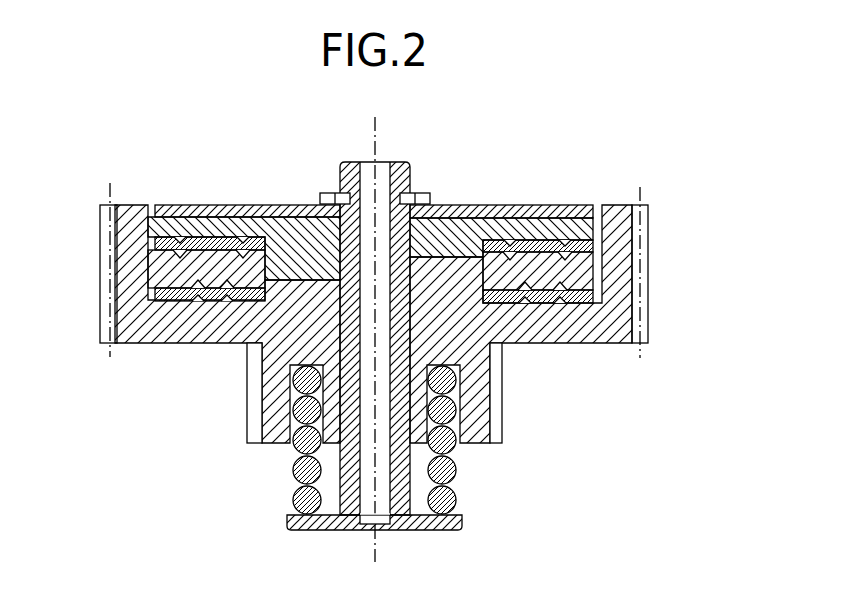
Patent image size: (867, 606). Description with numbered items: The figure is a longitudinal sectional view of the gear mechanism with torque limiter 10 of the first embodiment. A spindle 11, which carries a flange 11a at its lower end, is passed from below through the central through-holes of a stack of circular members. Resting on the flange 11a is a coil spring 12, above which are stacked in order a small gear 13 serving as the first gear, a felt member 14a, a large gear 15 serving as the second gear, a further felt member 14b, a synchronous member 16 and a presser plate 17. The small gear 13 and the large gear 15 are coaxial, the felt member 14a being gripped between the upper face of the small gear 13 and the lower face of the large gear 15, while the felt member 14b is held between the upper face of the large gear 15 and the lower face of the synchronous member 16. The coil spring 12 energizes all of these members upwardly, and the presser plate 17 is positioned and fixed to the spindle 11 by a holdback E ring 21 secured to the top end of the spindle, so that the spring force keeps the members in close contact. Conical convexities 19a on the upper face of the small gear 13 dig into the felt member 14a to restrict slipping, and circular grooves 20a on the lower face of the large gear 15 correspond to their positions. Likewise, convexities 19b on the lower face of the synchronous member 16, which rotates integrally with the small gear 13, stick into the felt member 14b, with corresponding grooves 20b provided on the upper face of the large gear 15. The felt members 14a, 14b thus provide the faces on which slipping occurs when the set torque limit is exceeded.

The gear mechanism with torque limiter 10 is at (563, 118).
The spindle 11 is at (399, 161).
The flange 11a is at (437, 530).
The coil spring 12 is at (470, 466).
The small gear 13 is at (230, 326).
The felt member 14a is at (168, 302).
The felt member 14b is at (163, 252).
The large gear 15 is at (124, 205).
The synchronous member 16 is at (152, 228).
The presser plate 17 is at (592, 220).
The convexities 19a is at (196, 316).
The convexities 19b is at (242, 230).
The grooves 20a is at (177, 279).
The grooves 20b is at (204, 255).
The holdback E ring 21 is at (425, 193).